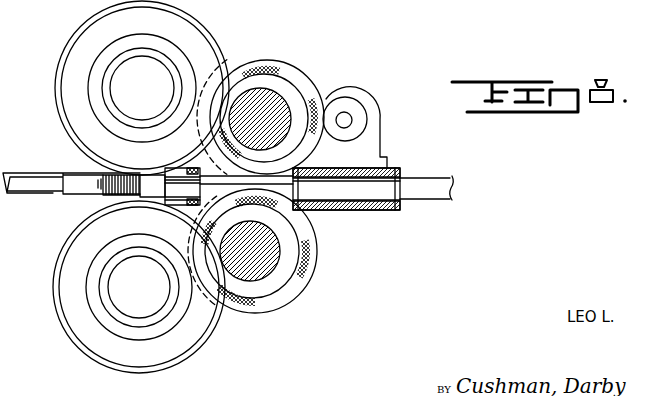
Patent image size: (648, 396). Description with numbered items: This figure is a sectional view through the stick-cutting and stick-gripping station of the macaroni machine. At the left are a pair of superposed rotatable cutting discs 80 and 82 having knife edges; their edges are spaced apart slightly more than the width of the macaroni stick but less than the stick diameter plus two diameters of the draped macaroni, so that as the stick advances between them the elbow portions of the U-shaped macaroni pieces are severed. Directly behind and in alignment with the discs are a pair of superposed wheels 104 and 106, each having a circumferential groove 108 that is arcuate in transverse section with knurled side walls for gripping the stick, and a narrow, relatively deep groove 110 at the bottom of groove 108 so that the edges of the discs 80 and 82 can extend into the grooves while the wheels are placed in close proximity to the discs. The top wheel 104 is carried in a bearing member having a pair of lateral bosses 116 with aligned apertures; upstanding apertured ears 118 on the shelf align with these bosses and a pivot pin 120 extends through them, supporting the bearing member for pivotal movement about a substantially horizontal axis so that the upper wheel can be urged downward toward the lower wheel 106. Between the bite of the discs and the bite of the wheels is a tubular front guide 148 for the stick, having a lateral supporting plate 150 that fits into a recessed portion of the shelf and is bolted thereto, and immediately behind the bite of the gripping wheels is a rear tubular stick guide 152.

The cutting disc 80 is at (84, 53).
The cutting disc 82 is at (80, 330).
The wheel 104 is at (283, 97).
The wheel 106 is at (298, 292).
The circumferential groove 108 is at (302, 75).
The circumferential groove 110 is at (268, 84).
The lateral boss 116 is at (377, 116).
The apertured ear 118 is at (380, 122).
The pivot pin 120 is at (350, 127).
The tubular front guide 148 is at (197, 207).
The lateral supporting plate 150 is at (190, 166).
The rear tubular stick guide 152 is at (363, 210).